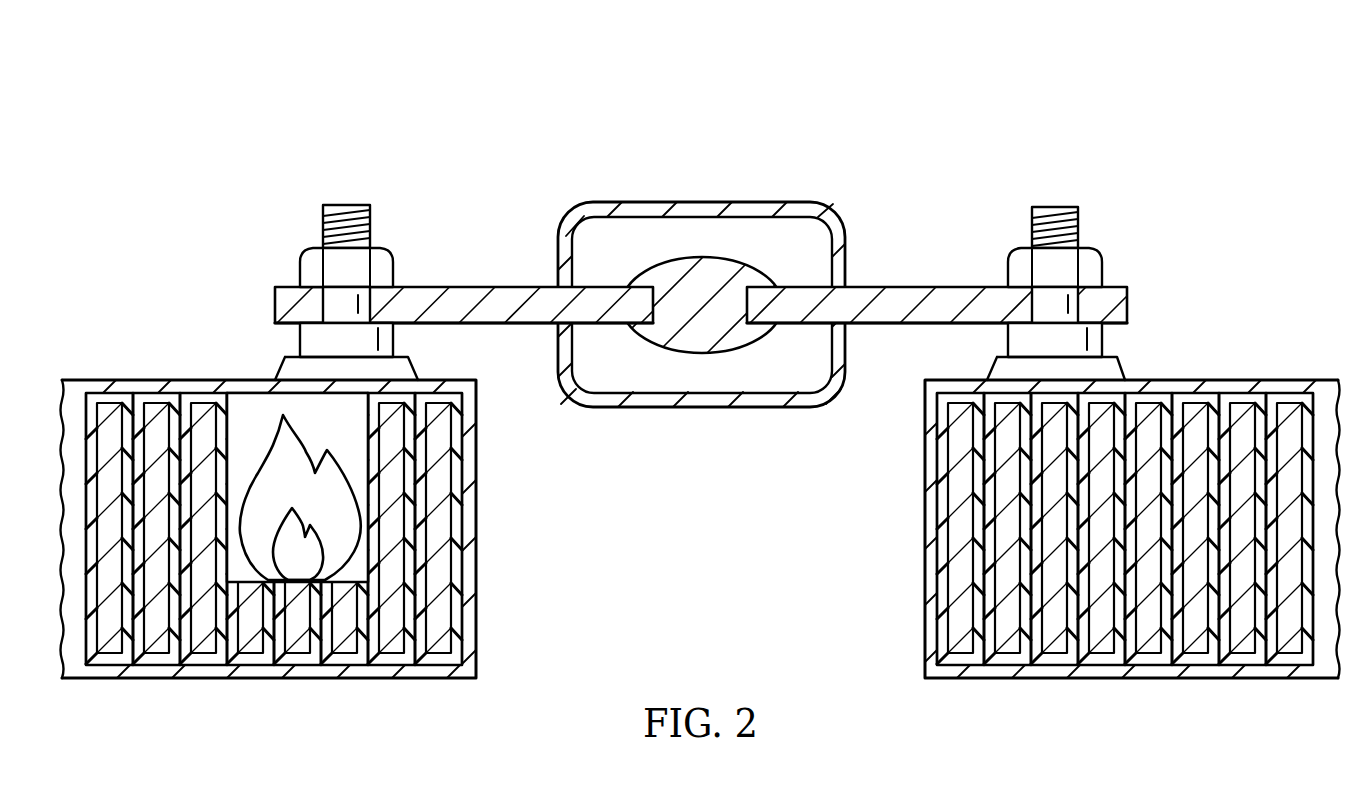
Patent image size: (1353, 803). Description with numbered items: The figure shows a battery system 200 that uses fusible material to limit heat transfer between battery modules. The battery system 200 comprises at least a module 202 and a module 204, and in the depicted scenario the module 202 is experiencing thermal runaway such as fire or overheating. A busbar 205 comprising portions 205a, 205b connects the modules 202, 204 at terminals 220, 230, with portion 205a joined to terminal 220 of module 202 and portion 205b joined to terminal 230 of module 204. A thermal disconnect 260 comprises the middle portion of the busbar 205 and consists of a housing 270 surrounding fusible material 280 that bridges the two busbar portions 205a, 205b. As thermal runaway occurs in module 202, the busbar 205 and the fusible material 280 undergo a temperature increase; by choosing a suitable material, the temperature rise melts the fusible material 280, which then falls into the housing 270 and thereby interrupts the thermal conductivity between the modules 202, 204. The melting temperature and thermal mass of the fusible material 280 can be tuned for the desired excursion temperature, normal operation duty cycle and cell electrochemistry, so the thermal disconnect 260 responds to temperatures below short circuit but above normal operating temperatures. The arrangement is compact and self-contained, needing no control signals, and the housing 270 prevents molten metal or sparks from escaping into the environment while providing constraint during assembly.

The battery system 200 is at (437, 120).
The module 202 is at (165, 345).
The module 204 is at (1237, 345).
The busbar 205 is at (900, 248).
The busbar portion 205a is at (505, 287).
The busbar portion 205b is at (955, 287).
The terminal 220 is at (347, 206).
The terminal 230 is at (1057, 207).
The thermal disconnect 260 is at (647, 182).
The housing 270 is at (710, 203).
The fusible material 280 is at (628, 278).